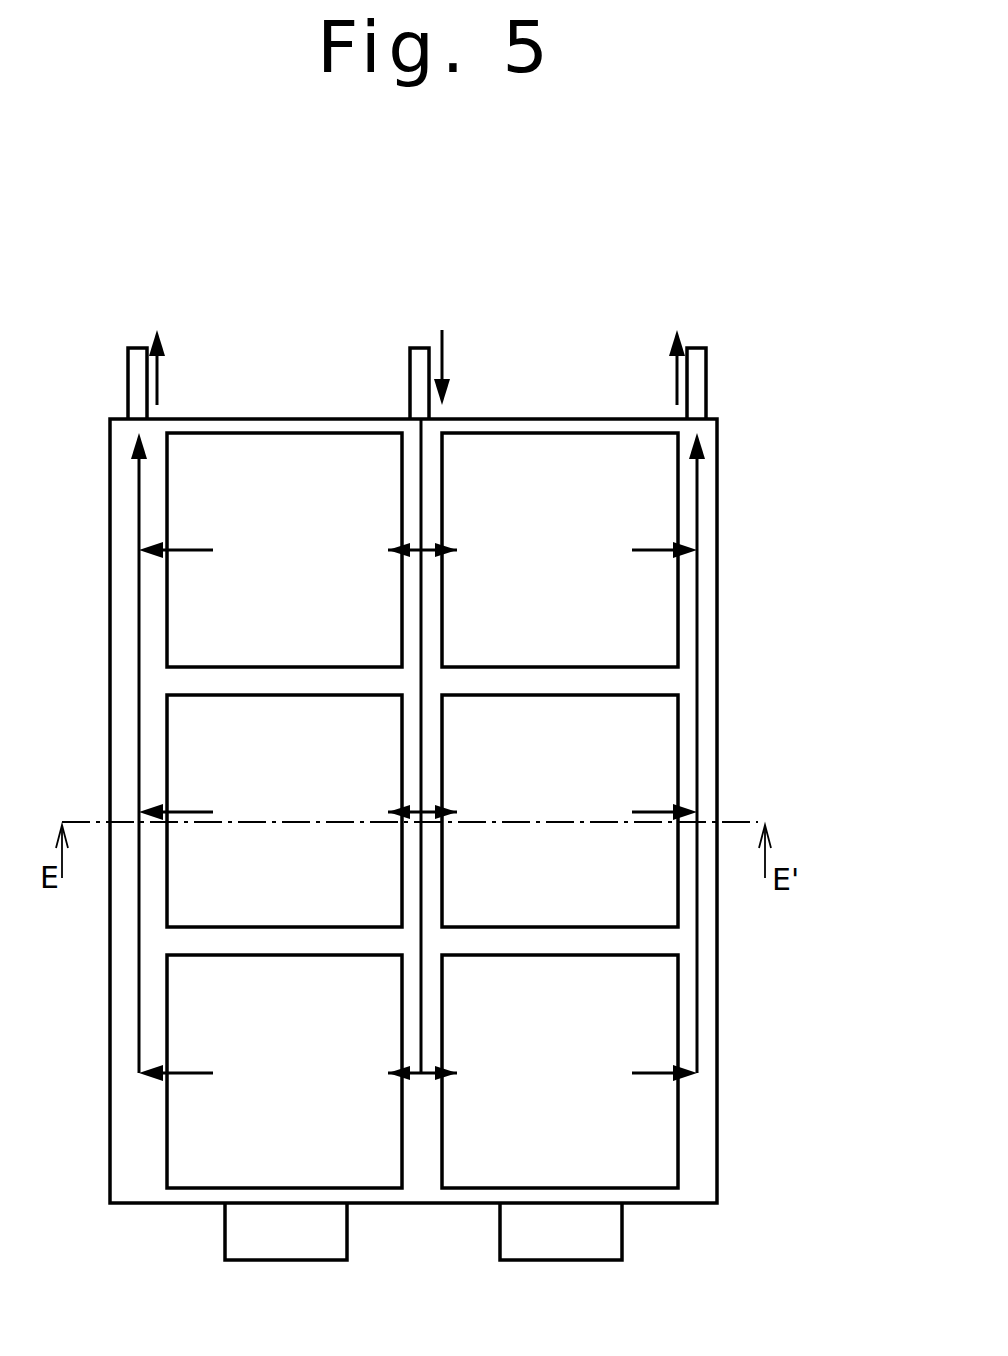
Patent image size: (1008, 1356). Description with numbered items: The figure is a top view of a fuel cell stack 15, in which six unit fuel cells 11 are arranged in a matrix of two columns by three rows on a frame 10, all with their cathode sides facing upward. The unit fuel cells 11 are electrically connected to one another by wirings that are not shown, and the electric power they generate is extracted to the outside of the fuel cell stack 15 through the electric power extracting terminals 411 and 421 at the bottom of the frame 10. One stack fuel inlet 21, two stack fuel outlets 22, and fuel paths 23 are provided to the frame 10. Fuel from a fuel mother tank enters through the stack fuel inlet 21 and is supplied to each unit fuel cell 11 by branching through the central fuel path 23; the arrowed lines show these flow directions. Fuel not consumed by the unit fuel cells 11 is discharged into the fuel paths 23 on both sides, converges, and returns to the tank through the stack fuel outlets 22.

The frame 10 is at (720, 1018).
The unit fuel cell 11 is at (198, 497).
The fuel cell stack 15 is at (882, 442).
The stack fuel inlet 21 is at (420, 370).
The stack fuel outlet 22 is at (138, 370).
The fuel path 23 is at (421, 457).
The electric power extracting terminal 411 is at (603, 1240).
The electric power extracting terminal 421 is at (243, 1242).